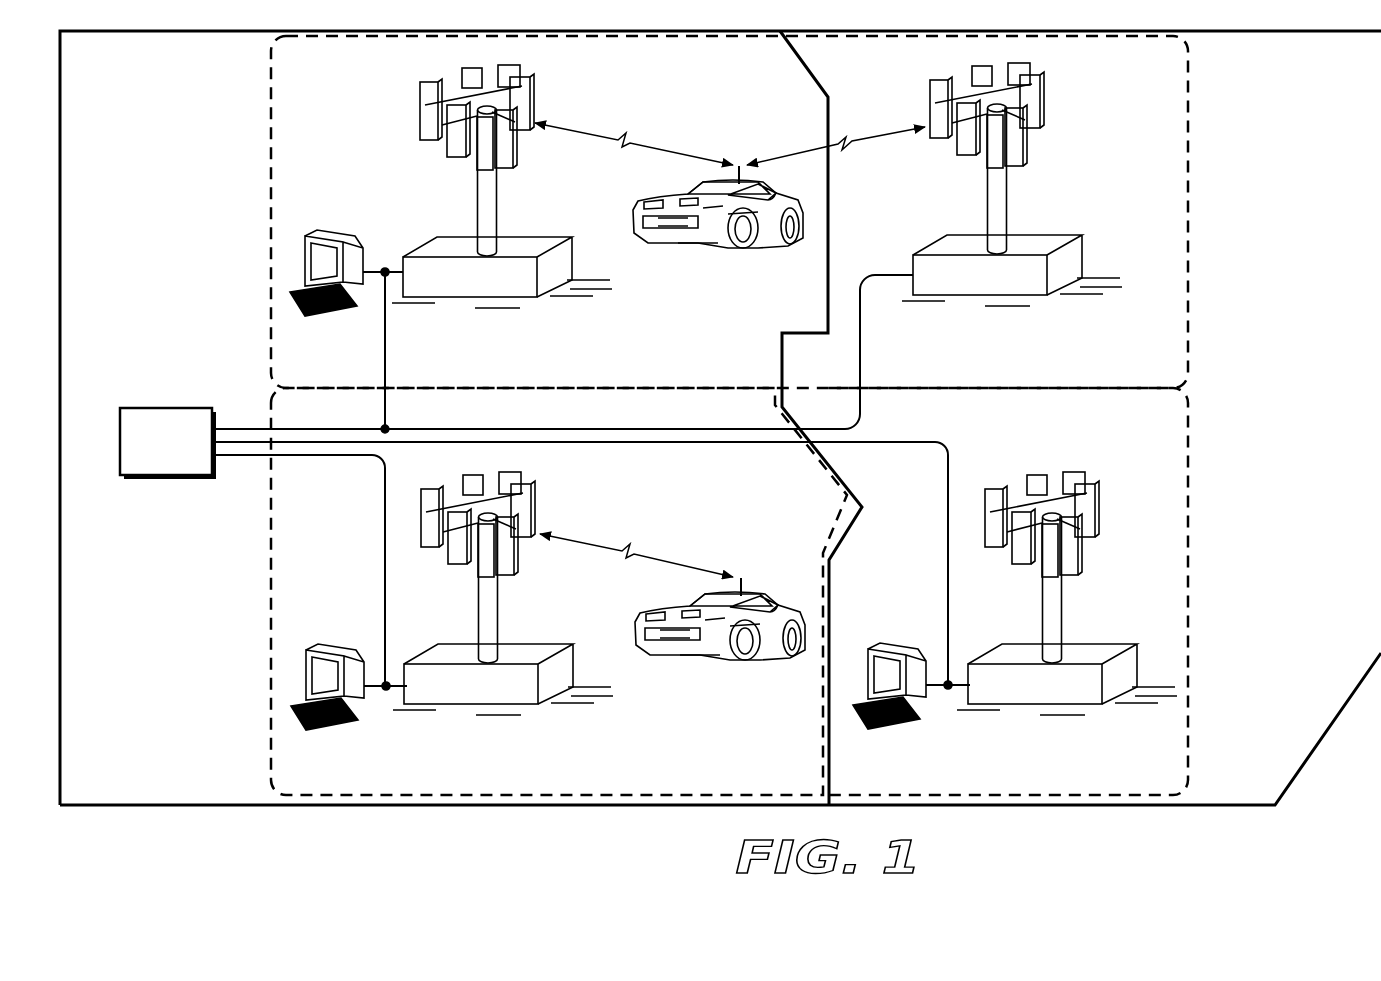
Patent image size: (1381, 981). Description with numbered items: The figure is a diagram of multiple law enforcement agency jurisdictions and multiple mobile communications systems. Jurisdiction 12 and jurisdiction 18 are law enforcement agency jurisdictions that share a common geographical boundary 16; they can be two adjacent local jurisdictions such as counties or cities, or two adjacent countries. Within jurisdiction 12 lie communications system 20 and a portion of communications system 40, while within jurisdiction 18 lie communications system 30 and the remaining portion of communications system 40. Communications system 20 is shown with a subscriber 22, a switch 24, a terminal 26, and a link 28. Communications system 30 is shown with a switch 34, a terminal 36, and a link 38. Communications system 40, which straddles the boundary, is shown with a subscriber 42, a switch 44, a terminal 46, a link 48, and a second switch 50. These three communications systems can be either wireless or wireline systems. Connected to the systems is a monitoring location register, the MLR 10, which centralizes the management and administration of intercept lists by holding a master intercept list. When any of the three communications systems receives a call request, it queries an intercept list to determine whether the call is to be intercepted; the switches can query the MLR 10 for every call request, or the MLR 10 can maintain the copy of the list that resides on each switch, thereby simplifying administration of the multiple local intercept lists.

The monitoring location register (MLR) 10 is at (170, 480).
The jurisdiction 12 is at (179, 262).
The common geographical boundary 16 is at (803, 67).
The jurisdiction 18 is at (1306, 262).
The communications system 20 is at (728, 507).
The subscriber 22 is at (643, 618).
The switch 24 is at (533, 652).
The terminal 26 is at (334, 661).
The link 28 is at (385, 554).
The communications system 30 is at (1146, 439).
The switch 34 is at (1095, 651).
The terminal 36 is at (898, 661).
The link 38 is at (948, 575).
The communications system 40 is at (1139, 114).
The subscriber 42 is at (643, 207).
The switch 44 is at (533, 242).
The terminal 46 is at (334, 252).
The link 48 is at (890, 275).
The switch 50 is at (1042, 237).